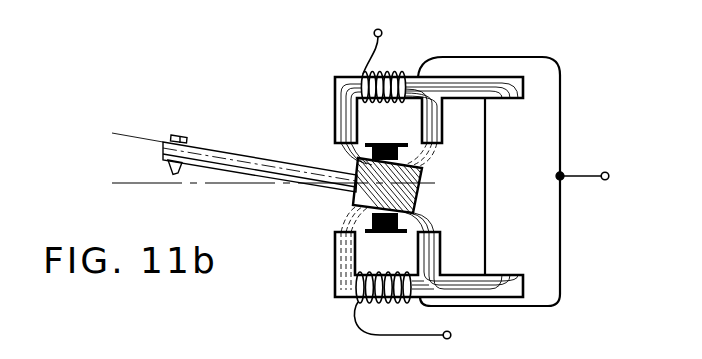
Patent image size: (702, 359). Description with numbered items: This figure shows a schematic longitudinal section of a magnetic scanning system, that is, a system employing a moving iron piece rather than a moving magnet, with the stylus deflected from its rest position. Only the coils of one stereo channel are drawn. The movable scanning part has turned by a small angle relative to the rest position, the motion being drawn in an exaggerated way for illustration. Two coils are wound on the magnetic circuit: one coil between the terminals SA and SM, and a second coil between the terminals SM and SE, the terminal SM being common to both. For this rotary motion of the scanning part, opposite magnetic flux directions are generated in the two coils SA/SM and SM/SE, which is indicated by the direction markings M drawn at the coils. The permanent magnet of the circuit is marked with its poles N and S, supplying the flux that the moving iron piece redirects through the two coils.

The coil terminal SA is at (383, 37).
The coil terminal SE is at (418, 326).
The common coil terminal SM is at (598, 179).
The magnetization direction arrows M is at (382, 60).
The north pole of permanent magnet N is at (498, 142).
The south pole of permanent magnet S is at (498, 232).